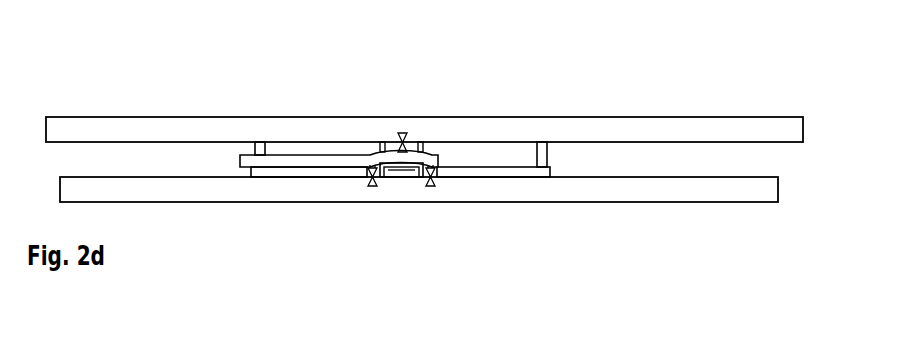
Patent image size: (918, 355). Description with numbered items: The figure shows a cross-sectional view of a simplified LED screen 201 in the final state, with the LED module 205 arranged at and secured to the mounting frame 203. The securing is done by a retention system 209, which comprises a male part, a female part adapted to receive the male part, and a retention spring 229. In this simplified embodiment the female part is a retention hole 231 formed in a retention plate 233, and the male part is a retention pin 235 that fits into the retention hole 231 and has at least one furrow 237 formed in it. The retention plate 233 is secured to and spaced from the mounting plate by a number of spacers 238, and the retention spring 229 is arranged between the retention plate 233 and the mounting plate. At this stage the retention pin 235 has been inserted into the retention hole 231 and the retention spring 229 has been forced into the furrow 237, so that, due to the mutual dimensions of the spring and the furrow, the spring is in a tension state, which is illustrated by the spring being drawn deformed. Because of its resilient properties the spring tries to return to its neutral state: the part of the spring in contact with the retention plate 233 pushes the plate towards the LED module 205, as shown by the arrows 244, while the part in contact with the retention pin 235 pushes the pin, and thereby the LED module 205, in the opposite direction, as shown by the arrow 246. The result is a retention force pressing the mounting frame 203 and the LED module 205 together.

The LED screen 201 is at (682, 27).
The mounting frame 203 is at (424, 129).
The LED module 205 is at (419, 189).
The retention system 209 is at (628, 163).
The retention spring 229 is at (240, 160).
The retention hole 231 is at (427, 177).
The retention plate 233 is at (310, 170).
The retention pin 235 is at (389, 175).
The furrow 237 is at (401, 175).
The spacers 238 is at (262, 142).
The arrows 244 is at (369, 182).
The arrow 246 is at (402, 133).